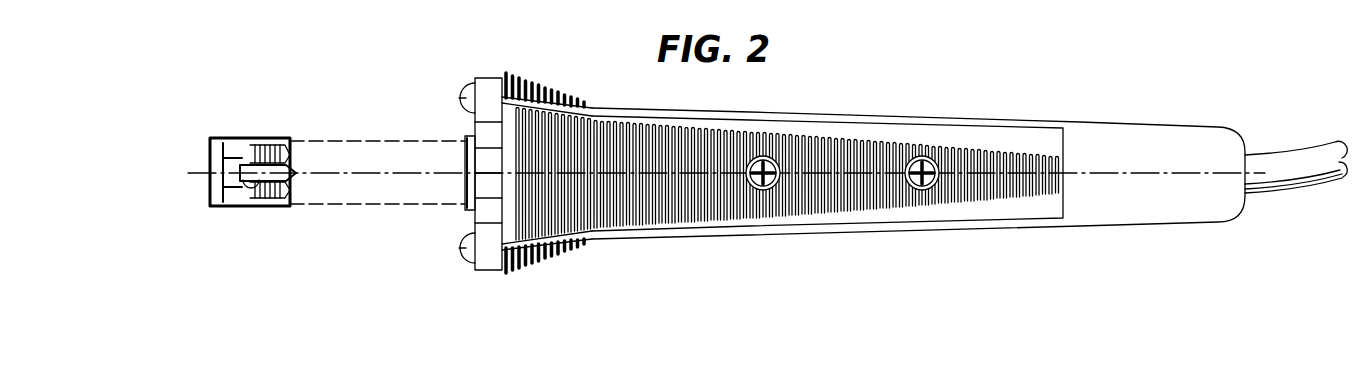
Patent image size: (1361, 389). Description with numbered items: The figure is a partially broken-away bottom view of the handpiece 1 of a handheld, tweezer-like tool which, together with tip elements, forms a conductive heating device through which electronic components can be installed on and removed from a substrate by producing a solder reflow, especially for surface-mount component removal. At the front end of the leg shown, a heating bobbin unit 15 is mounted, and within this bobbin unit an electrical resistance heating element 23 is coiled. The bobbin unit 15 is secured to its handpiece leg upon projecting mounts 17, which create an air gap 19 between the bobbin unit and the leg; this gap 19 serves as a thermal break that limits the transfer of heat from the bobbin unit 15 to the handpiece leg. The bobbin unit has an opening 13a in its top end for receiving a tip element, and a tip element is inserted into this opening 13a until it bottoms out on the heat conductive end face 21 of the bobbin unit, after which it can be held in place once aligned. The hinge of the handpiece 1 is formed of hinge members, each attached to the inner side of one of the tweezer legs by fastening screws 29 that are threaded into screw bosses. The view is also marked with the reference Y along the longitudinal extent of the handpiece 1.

The handpiece 1 is at (1140, 108).
The opening 13a is at (210, 206).
The heating bobbin unit 15 is at (378, 145).
The projecting mount 17 is at (489, 260).
The air gap 19 is at (492, 133).
The heat conductive end face 21 is at (237, 140).
The electrical resistance heating element 23 is at (275, 142).
The fastening screw 29 is at (890, 144).
The axis Y is at (316, 176).